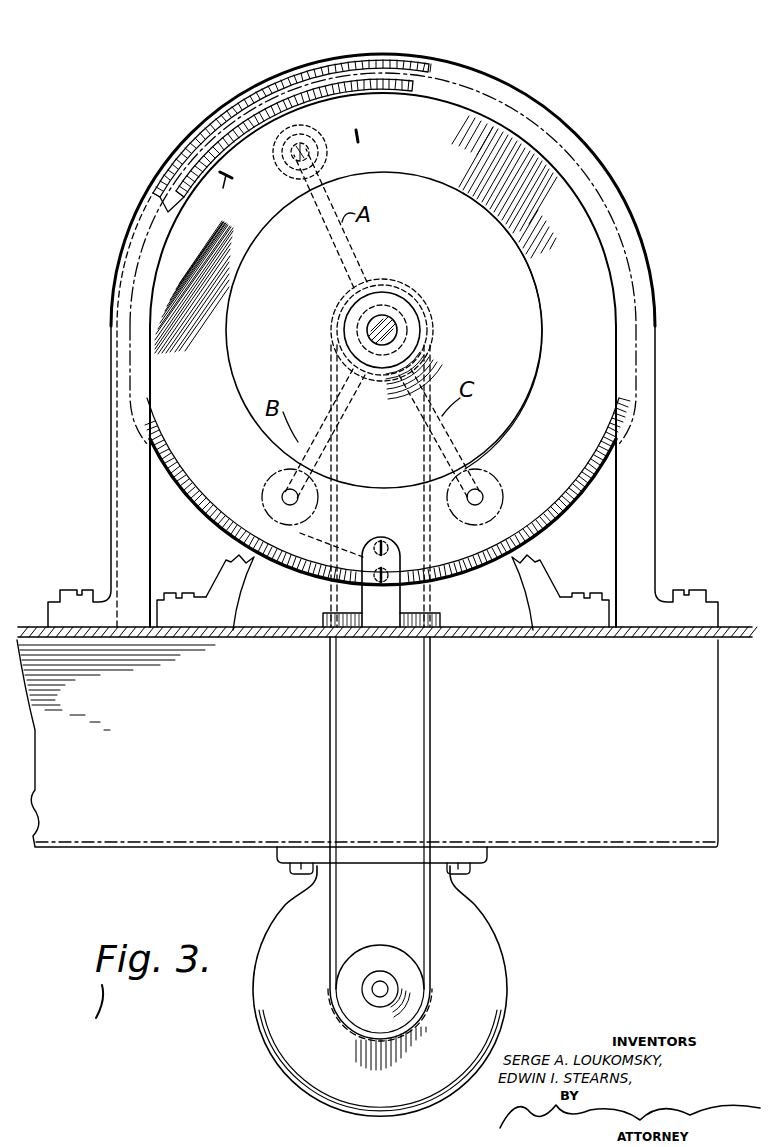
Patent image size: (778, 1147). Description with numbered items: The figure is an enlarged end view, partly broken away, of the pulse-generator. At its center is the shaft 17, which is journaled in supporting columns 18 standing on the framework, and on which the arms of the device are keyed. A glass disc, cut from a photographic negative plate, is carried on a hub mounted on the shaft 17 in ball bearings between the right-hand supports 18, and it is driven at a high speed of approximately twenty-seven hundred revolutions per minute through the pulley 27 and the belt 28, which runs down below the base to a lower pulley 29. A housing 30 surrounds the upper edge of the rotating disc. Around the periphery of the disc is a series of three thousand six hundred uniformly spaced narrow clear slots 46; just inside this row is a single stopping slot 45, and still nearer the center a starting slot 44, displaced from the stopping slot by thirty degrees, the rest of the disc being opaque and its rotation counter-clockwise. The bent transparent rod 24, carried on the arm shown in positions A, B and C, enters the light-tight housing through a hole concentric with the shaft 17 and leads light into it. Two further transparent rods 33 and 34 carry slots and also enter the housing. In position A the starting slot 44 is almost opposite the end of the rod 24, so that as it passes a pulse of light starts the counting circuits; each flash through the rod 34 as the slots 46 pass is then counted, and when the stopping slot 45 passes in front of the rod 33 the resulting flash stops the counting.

The shaft 17 is at (378, 333).
The supporting columns 18 is at (238, 596).
The bent rod 24 is at (311, 138).
The pulley 27 is at (346, 312).
The belt 28 is at (339, 432).
The drive pulley 29 is at (500, 946).
The housing 30 is at (225, 103).
The transparent plastic rod 33 is at (399, 537).
The transparent plastic rod 34 is at (324, 537).
The starting slot 44 is at (358, 141).
The stopping slot 45 is at (222, 188).
The slots 46 is at (405, 57).